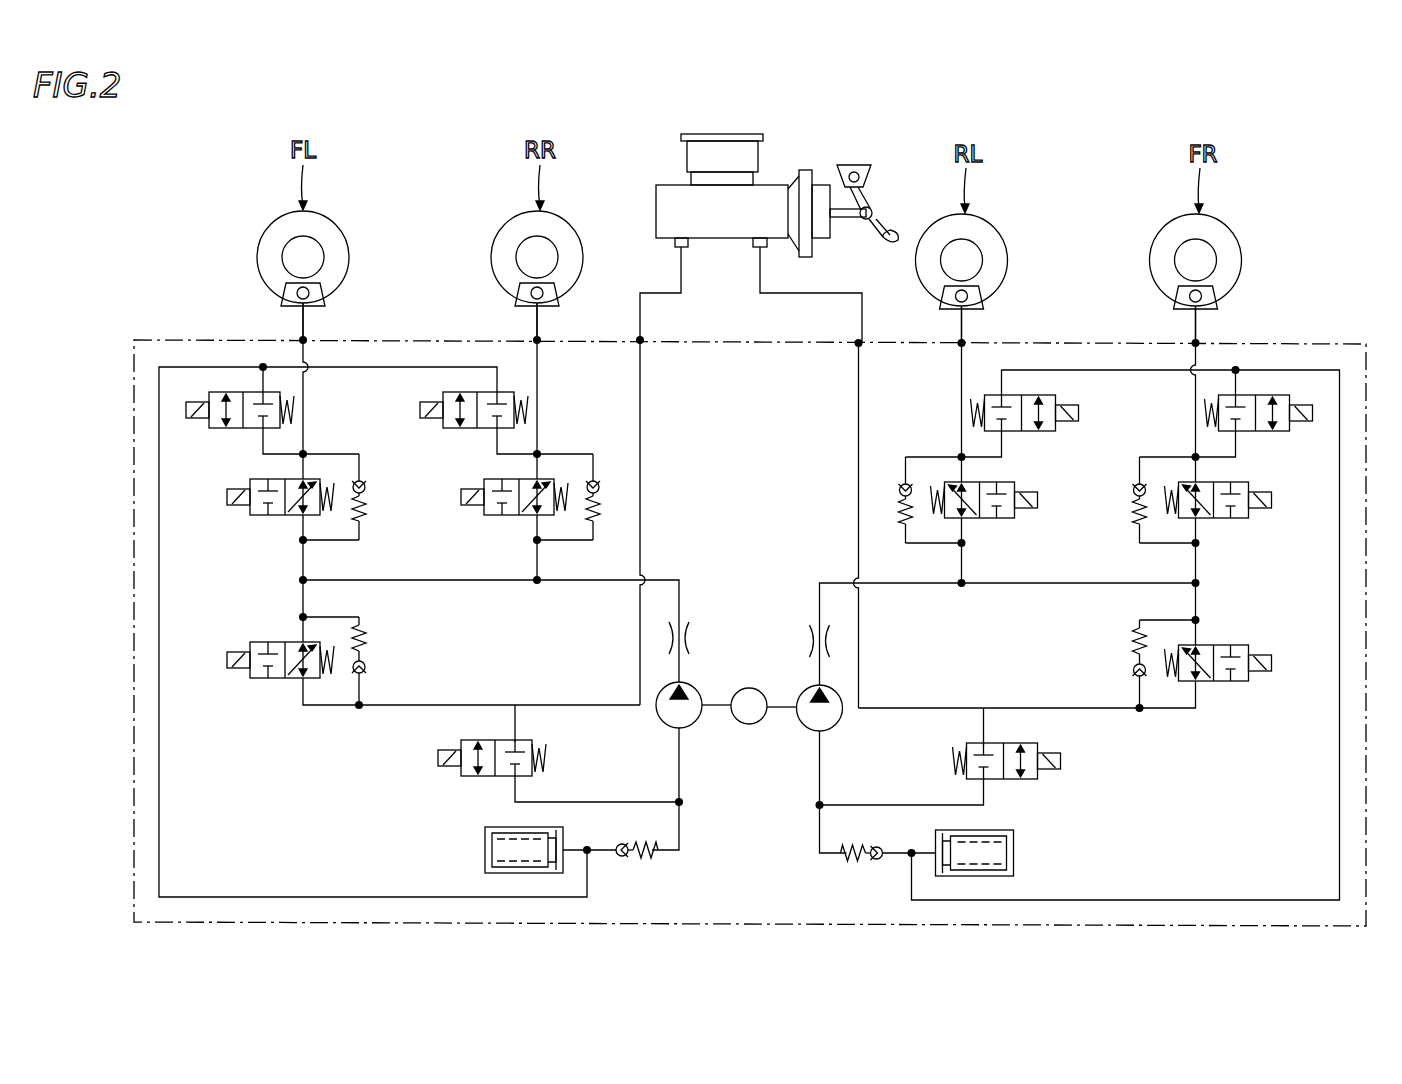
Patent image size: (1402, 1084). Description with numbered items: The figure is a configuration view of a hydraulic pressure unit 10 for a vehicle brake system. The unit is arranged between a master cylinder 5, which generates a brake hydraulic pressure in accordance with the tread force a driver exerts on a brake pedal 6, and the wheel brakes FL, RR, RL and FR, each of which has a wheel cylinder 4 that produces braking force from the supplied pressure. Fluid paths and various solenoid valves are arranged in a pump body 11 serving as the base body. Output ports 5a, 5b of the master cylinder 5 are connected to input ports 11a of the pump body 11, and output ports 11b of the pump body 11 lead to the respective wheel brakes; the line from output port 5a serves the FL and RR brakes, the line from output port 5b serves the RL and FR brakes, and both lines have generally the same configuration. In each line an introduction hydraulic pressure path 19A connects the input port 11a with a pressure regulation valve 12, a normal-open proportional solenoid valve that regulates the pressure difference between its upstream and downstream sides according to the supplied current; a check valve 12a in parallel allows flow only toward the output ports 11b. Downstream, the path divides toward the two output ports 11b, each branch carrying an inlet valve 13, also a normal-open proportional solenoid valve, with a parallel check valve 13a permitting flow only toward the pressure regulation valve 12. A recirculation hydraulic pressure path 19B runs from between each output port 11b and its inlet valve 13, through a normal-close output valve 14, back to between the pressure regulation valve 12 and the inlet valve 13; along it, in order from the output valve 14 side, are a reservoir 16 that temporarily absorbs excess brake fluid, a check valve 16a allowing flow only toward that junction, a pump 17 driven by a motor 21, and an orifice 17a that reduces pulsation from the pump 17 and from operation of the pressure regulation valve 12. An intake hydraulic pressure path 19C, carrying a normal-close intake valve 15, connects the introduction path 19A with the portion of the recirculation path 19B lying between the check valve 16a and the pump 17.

The wheel cylinder 4 is at (297, 293).
The master cylinder 5 is at (672, 190).
The output port 5a is at (683, 250).
The output port 5b is at (762, 250).
The brake pedal 6 is at (893, 238).
The hydraulic pressure unit 10 is at (1310, 334).
The pump body 11 is at (1054, 342).
The input port 11a is at (648, 341).
The output port 11b is at (307, 341).
The pressure regulation valve 12 is at (259, 642).
The check valve 12a is at (368, 652).
The inlet valve 13 is at (258, 516).
The check valve 13a is at (366, 484).
The output valve 14 is at (218, 429).
The intake valve 15 is at (474, 778).
The reservoir 16 is at (478, 853).
The check valve 16a is at (640, 860).
The pump 17 is at (690, 730).
The orifice 17a is at (692, 638).
The introduction hydraulic pressure path 19A is at (641, 386).
The recirculation hydraulic pressure path 19B is at (162, 777).
The intake hydraulic pressure path 19C is at (596, 800).
The motor 21 is at (748, 725).